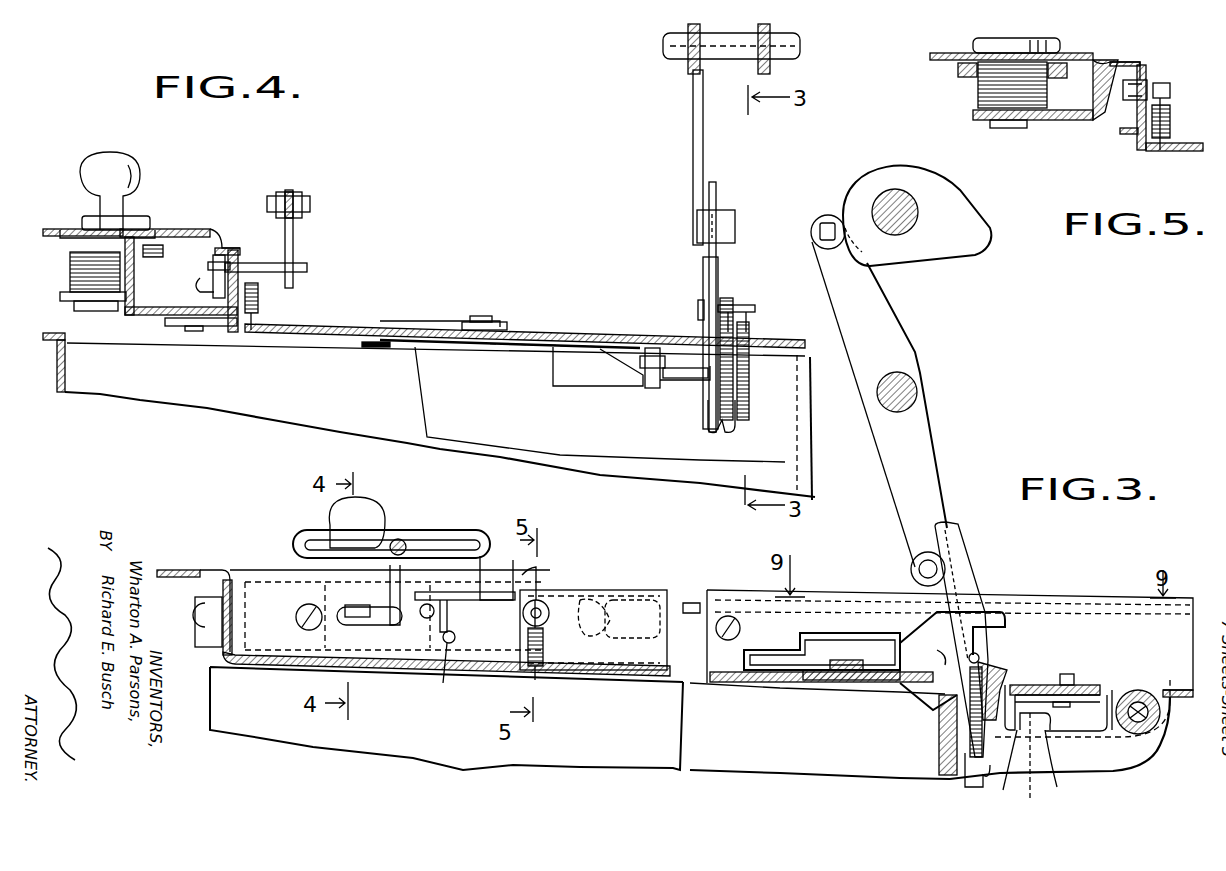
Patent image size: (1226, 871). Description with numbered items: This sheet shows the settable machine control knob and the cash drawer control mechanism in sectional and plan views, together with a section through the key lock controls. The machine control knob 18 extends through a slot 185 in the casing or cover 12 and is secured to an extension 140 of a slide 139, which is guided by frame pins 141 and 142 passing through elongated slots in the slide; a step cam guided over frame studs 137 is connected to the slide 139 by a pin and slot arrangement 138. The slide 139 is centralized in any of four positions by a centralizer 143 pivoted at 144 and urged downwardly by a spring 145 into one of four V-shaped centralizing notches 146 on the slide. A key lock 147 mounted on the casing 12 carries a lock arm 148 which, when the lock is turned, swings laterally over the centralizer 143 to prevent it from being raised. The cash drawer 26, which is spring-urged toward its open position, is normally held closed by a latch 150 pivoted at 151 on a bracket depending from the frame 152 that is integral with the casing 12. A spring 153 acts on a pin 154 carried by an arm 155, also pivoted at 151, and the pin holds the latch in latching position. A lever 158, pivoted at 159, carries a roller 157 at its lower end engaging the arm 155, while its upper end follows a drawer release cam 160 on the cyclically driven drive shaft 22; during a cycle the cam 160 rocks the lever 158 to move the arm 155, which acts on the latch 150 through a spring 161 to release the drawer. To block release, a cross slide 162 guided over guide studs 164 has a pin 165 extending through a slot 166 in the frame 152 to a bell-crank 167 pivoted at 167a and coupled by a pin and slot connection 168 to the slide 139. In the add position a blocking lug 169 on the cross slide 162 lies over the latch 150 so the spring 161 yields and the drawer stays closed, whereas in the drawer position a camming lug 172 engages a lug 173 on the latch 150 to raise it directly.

In FIG. 4, the cover 12 is at (52, 234).
In FIG. 5, the cover 12 is at (932, 53).
In FIG. 3, the cover 12 is at (176, 570).
In FIG. 4, the machine control knob 18 is at (82, 160).
In FIG. 3, the machine control knob 18 is at (325, 509).
In FIG. 3, the drive shaft 22 is at (918, 212).
In FIG. 4, the cash drawer 26 is at (694, 341).
In FIG. 3, the cash drawer 26 is at (701, 674).
In FIG. 4, the frame studs 137 is at (306, 204).
In FIG. 3, the frame studs 137 is at (408, 546).
In FIG. 4, the pin and slot arrangement 138 is at (300, 267).
In FIG. 3, the pin and slot arrangement 138 is at (425, 600).
In FIG. 5, the slide 139 is at (1130, 136).
In FIG. 3, the slide 139 is at (195, 610).
In FIG. 4, the extension 140 is at (160, 314).
In FIG. 3, the extension 140 is at (378, 625).
In FIG. 3, the frame pin 141 is at (296, 611).
In FIG. 3, the frame pin 142 is at (742, 628).
In FIG. 4, the centralizer 143 is at (213, 257).
In FIG. 5, the centralizer 143 is at (1108, 100).
In FIG. 3, the centralizer 143 is at (541, 602).
In FIG. 4, the pivot 144 is at (192, 274).
In FIG. 3, the pivot 144 is at (445, 650).
In FIG. 4, the spring 145 is at (260, 295).
In FIG. 5, the spring 145 is at (1170, 125).
In FIG. 3, the spring 145 is at (545, 665).
In FIG. 3, the centralizing notches 146 is at (612, 580).
In FIG. 4, the key lock 147 is at (60, 266).
In FIG. 5, the key lock 147 is at (970, 94).
In FIG. 3, the key lock 147 is at (540, 567).
In FIG. 4, the lock arm 148 is at (64, 298).
In FIG. 5, the lock arm 148 is at (1076, 121).
In FIG. 3, the lock arm 148 is at (650, 600).
In FIG. 4, the latch 150 is at (720, 268).
In FIG. 3, the latch 150 is at (930, 706).
In FIG. 4, the pivot 151 is at (656, 347).
In FIG. 3, the pivot 151 is at (1139, 705).
In FIG. 5, the frame 152 is at (1148, 151).
In FIG. 3, the frame 152 is at (1187, 702).
In FIG. 4, the spring 153 is at (750, 326).
In FIG. 3, the spring 153 is at (997, 687).
In FIG. 4, the pin 154 is at (750, 305).
In FIG. 3, the pin 154 is at (980, 655).
In FIG. 4, the arm 155 is at (716, 198).
In FIG. 3, the arm 155 is at (962, 574).
In FIG. 4, the roller 157 is at (734, 217).
In FIG. 3, the roller 157 is at (911, 556).
In FIG. 4, the lever 158 is at (693, 133).
In FIG. 3, the lever 158 is at (900, 507).
In FIG. 4, the pivot 159 is at (663, 45).
In FIG. 3, the pivot 159 is at (917, 384).
In FIG. 3, the drawer release cam 160 is at (988, 222).
In FIG. 4, the spring 161 is at (735, 416).
In FIG. 3, the spring 161 is at (972, 780).
In FIG. 4, the cross slide 162 is at (519, 348).
In FIG. 3, the cross slide 162 is at (1095, 698).
In FIG. 4, the guide studs 164 is at (376, 347).
In FIG. 3, the pin 165 is at (1066, 674).
In FIG. 3, the slot 166 is at (1090, 677).
In FIG. 3, the bell-crank 167 is at (828, 680).
In FIG. 4, the pivot 167a is at (483, 315).
In FIG. 3, the pivot 167a is at (850, 660).
In FIG. 4, the pin and slot connection 168 is at (193, 330).
In FIG. 3, the pin and slot connection 168 is at (840, 660).
In FIG. 3, the blocking lug 169 is at (1015, 766).
In FIG. 4, the camming lug 172 is at (612, 384).
In FIG. 3, the camming lug 172 is at (1037, 769).
In FIG. 4, the lug 173 is at (677, 380).
In FIG. 3, the lug 173 is at (1058, 790).
In FIG. 4, the slot 185 is at (84, 216).